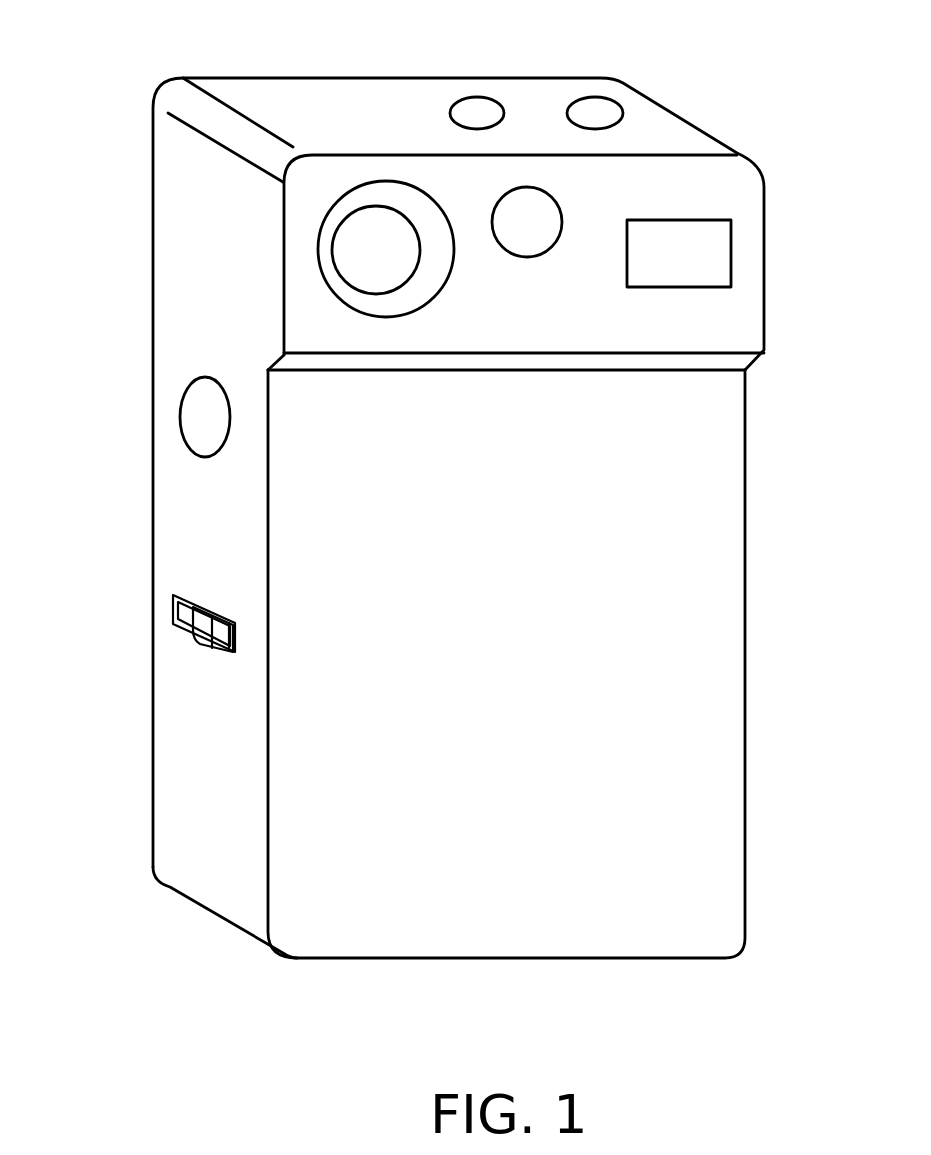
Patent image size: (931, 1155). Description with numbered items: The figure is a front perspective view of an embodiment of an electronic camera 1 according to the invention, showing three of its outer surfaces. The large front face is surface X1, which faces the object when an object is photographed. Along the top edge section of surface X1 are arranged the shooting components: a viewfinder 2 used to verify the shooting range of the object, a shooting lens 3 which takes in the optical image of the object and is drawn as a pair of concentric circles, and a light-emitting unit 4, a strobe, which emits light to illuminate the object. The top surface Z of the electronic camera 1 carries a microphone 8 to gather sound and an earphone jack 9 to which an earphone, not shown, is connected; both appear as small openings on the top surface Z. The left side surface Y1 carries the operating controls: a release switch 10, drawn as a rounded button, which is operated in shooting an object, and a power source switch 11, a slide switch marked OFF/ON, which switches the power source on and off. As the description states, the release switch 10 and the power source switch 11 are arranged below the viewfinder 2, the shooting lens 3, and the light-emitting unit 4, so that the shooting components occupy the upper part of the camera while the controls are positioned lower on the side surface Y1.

The electronic camera 1 is at (350, 898).
The viewfinder 2 is at (547, 215).
The shooting lens 3 is at (377, 275).
The light-emitting unit 4 is at (705, 245).
The microphone 8 is at (477, 112).
The earphone jack 9 is at (598, 107).
The release switch 10 is at (205, 425).
The power source switch 11 is at (192, 643).
The top surface Z is at (273, 103).
The left side surface Y1 is at (180, 193).
The surface facing the object X1 is at (714, 577).